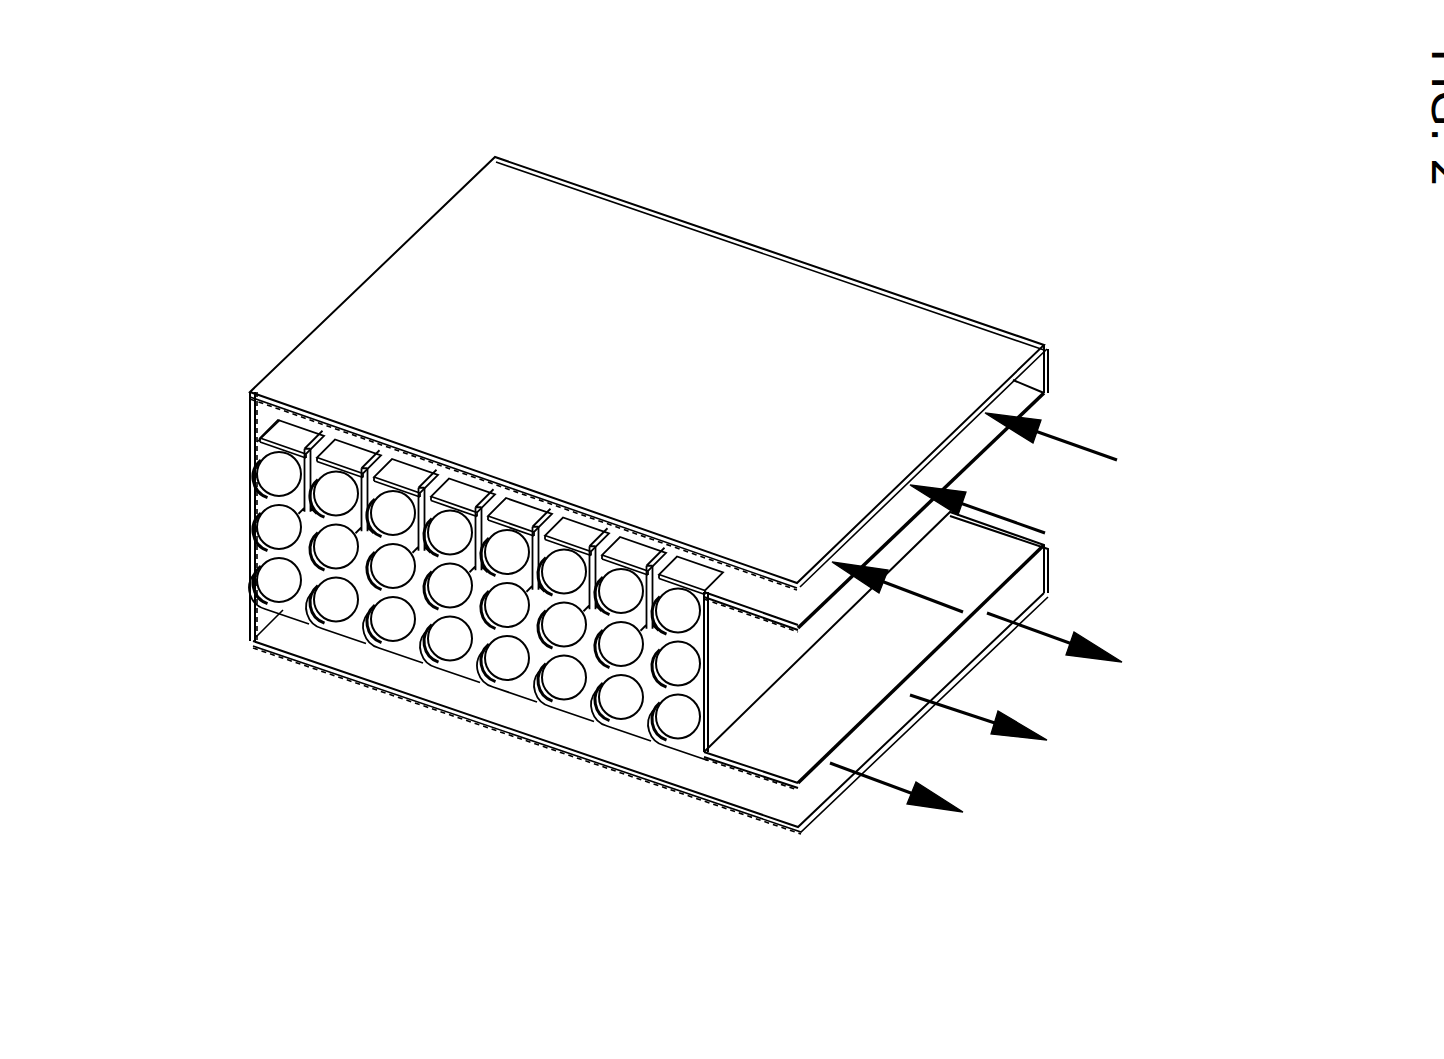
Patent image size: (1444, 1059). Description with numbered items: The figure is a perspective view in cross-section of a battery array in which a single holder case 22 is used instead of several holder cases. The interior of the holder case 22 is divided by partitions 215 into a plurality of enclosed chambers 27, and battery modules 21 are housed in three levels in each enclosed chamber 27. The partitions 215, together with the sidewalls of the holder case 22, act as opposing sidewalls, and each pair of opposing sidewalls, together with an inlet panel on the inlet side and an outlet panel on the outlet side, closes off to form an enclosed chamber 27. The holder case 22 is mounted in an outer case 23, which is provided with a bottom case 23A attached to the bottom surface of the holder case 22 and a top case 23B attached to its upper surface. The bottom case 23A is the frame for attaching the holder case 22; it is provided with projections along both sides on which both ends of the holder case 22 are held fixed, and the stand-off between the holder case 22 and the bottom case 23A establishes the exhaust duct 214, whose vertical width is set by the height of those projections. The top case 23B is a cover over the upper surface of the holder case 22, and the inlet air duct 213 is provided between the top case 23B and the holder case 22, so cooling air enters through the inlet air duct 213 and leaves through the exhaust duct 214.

The battery module 21 is at (272, 470).
The holder case 22 is at (228, 480).
The outer case 23 is at (1202, 485).
The bottom case 23A is at (953, 663).
The top case 23B is at (895, 428).
The enclosed chamber 27 is at (250, 509).
The inlet air duct 213 is at (1012, 401).
The exhaust duct 214 is at (850, 747).
The partition 215 is at (312, 508).